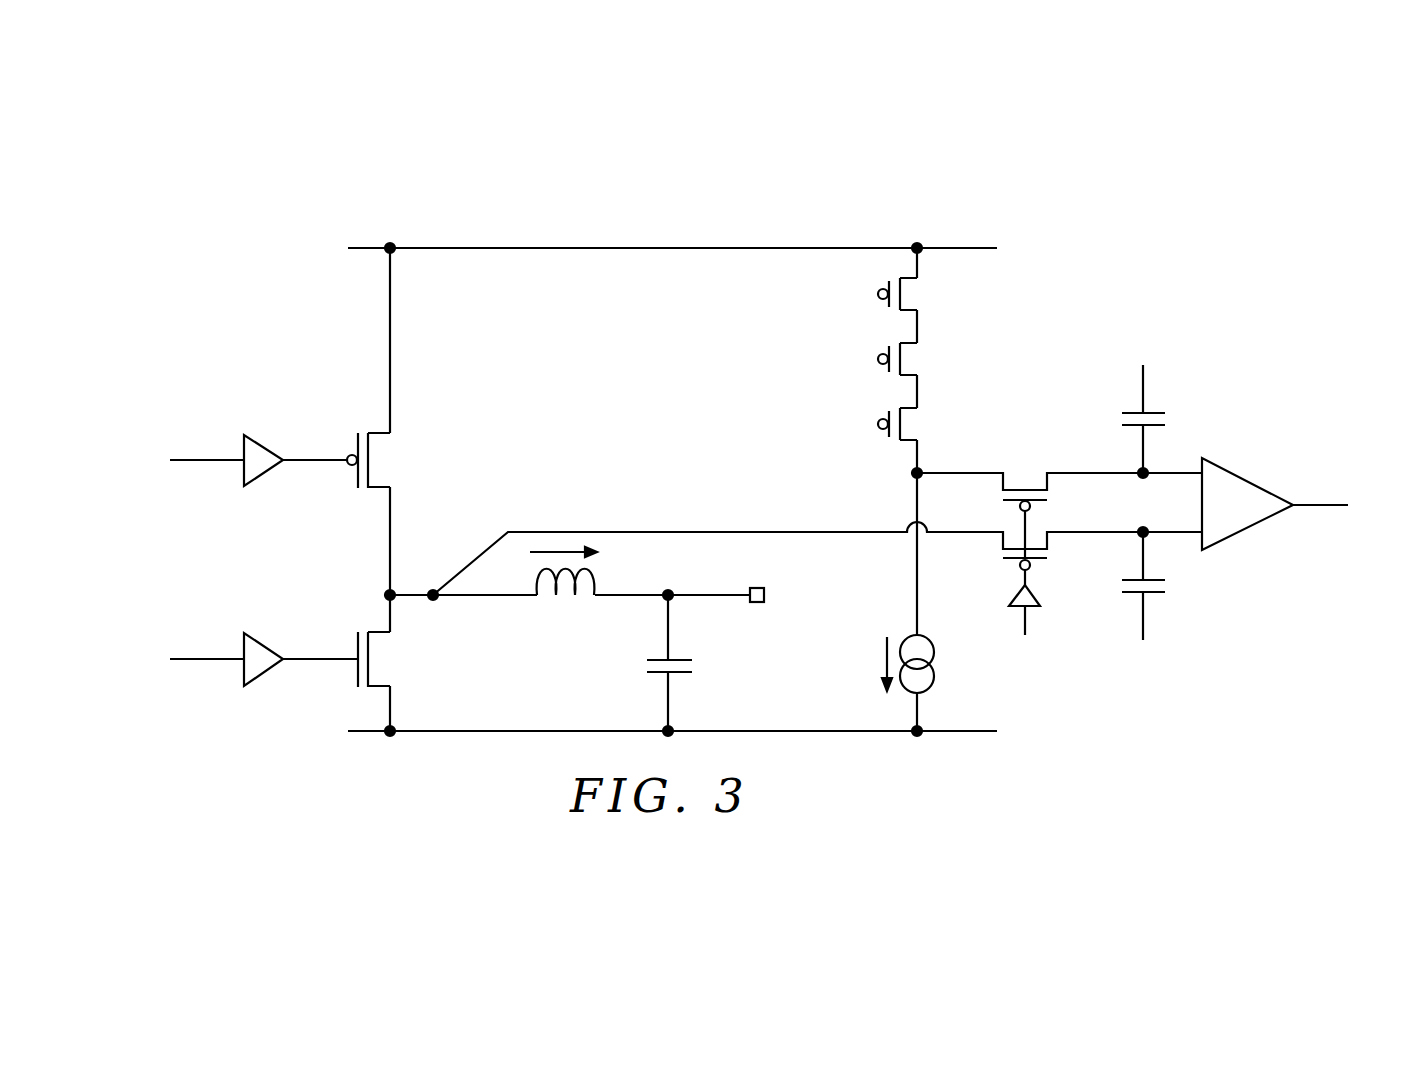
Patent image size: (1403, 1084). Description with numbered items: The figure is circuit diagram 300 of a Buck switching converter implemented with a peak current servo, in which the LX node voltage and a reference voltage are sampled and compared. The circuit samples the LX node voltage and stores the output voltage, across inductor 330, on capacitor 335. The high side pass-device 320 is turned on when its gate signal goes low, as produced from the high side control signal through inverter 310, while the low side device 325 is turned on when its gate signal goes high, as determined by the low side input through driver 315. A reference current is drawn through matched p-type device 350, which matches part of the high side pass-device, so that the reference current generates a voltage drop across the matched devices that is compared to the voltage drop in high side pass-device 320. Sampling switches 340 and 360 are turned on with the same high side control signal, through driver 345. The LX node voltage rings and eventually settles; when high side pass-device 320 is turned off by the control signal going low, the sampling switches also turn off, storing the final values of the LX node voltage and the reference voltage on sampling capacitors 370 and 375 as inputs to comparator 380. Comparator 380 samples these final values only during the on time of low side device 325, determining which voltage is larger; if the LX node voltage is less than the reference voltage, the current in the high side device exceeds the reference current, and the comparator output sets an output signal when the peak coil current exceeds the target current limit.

The circuit diagram 300 is at (403, 200).
The inverter 310 is at (270, 452).
The driver 315 is at (270, 652).
The high side pass-device 320 is at (414, 446).
The low side device 325 is at (414, 646).
The inductor 330 is at (566, 545).
The capacitor 335 is at (693, 673).
The sampling switch 340 is at (993, 548).
The driver 345 is at (1005, 605).
The matched PMOS 350 is at (862, 376).
The sampling switch 360 is at (1050, 490).
The sampling capacitor 370 is at (1168, 410).
The sampling capacitor 375 is at (1172, 600).
The comparator 380 is at (1252, 478).